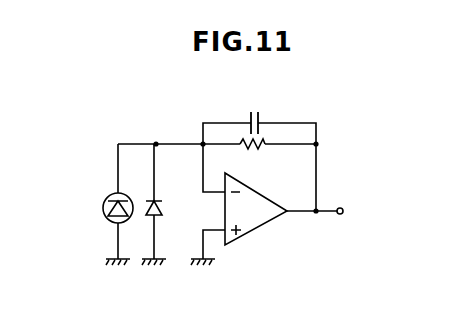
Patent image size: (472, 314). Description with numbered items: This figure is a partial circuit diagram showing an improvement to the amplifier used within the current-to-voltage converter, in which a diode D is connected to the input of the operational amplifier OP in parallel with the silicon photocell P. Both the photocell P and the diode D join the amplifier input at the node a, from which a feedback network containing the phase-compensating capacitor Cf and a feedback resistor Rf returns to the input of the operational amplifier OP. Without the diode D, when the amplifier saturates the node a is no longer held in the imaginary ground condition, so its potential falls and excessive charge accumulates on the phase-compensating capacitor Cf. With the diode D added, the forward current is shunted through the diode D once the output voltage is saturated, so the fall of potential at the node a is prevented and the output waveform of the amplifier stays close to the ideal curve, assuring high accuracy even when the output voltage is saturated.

The silicon photocell P is at (102, 214).
The diode D is at (162, 214).
The node a is at (203, 144).
The phase-compensating capacitor Cf is at (258, 121).
The feedback resistor Rf is at (256, 148).
The operational amplifier OP is at (268, 221).